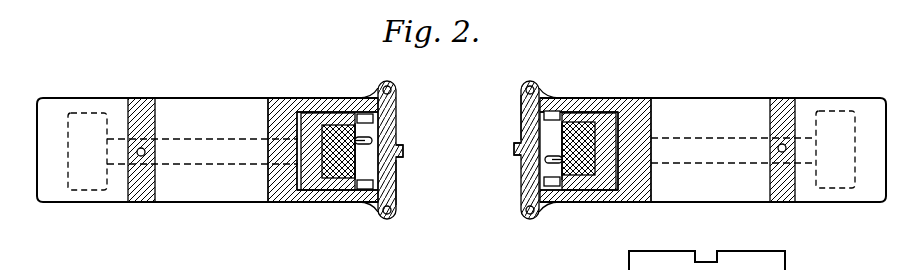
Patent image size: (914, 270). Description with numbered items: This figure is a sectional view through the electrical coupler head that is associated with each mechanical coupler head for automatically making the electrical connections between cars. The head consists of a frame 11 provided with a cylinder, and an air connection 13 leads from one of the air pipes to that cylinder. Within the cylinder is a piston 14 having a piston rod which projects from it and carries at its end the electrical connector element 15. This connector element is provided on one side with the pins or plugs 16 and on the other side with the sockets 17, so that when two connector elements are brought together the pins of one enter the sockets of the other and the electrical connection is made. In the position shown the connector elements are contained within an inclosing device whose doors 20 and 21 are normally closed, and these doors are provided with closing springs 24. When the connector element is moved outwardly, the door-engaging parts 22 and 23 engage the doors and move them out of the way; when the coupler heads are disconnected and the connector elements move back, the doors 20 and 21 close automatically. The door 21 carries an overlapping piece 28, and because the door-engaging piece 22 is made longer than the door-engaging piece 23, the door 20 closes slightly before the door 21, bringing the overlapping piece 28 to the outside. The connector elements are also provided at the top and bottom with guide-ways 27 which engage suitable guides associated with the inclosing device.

The frame 11 is at (139, 204).
The air connection 13 is at (145, 149).
The piston 14 is at (88, 191).
The electrical connector element 15 is at (357, 135).
The pins 16 is at (368, 141).
The sockets 17 is at (459, 151).
The door 20 is at (396, 103).
The door 21 is at (397, 188).
The door-engaging part 22 is at (364, 190).
The door-engaging part 23 is at (360, 113).
The closing springs 24 is at (394, 88).
The guide-ways 27 is at (707, 252).
The overlapping piece 28 is at (401, 149).